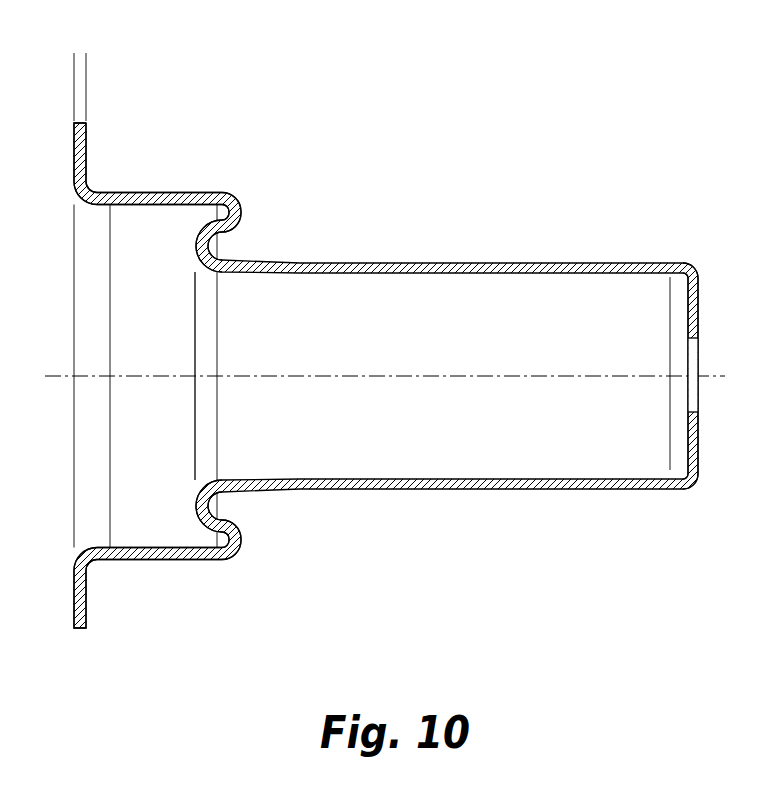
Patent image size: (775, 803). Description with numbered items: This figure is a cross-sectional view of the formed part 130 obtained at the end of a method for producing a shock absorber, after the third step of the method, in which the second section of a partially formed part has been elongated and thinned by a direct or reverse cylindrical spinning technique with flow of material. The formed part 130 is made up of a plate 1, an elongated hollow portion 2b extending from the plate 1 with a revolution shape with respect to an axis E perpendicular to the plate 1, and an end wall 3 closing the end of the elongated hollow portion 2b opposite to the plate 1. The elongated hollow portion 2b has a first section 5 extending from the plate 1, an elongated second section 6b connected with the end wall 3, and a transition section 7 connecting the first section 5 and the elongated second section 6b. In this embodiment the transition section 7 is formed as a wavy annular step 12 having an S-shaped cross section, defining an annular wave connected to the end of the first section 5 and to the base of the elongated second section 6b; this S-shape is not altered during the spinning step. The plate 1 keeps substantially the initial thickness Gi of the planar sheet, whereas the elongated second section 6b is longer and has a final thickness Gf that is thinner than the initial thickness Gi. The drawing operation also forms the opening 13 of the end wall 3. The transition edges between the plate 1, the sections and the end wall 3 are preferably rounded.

The plate 1 is at (74, 153).
The end wall 3 is at (699, 312).
The first section 5 is at (236, 118).
The elongated second section 6b is at (692, 118).
The transition section 7 is at (264, 217).
The annular step 12 is at (233, 508).
The opening 13 is at (694, 391).
The formed part 130 is at (538, 541).
The elongated hollow portion 2b is at (693, 632).
The initial thickness Gi is at (113, 63).
The final thickness Gf is at (451, 298).
The axis E is at (165, 374).